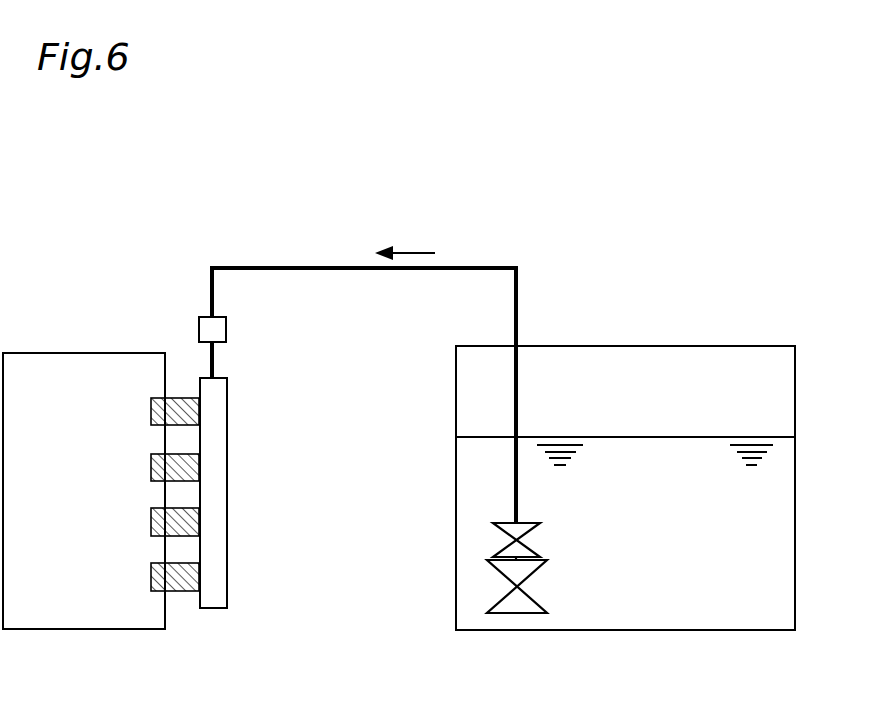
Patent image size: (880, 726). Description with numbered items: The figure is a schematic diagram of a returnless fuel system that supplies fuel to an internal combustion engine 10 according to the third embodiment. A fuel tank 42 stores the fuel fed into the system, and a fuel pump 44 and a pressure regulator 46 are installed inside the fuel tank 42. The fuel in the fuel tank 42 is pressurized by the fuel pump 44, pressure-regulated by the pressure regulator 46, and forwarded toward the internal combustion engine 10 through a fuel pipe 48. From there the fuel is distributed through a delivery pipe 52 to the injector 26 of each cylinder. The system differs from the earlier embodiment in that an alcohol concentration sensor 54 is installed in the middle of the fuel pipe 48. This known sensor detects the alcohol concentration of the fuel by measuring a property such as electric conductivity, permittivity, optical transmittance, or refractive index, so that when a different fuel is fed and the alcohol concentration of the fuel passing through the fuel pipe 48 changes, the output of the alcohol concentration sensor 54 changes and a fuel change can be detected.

The internal combustion engine 10 is at (71, 353).
The injector 26 is at (183, 398).
The fuel tank 42 is at (710, 346).
The fuel pump 44 is at (505, 597).
The pressure regulator 46 is at (505, 548).
The fuel pipe 48 is at (317, 268).
The delivery pipe 52 is at (227, 485).
The alcohol concentration sensor 54 is at (226, 328).